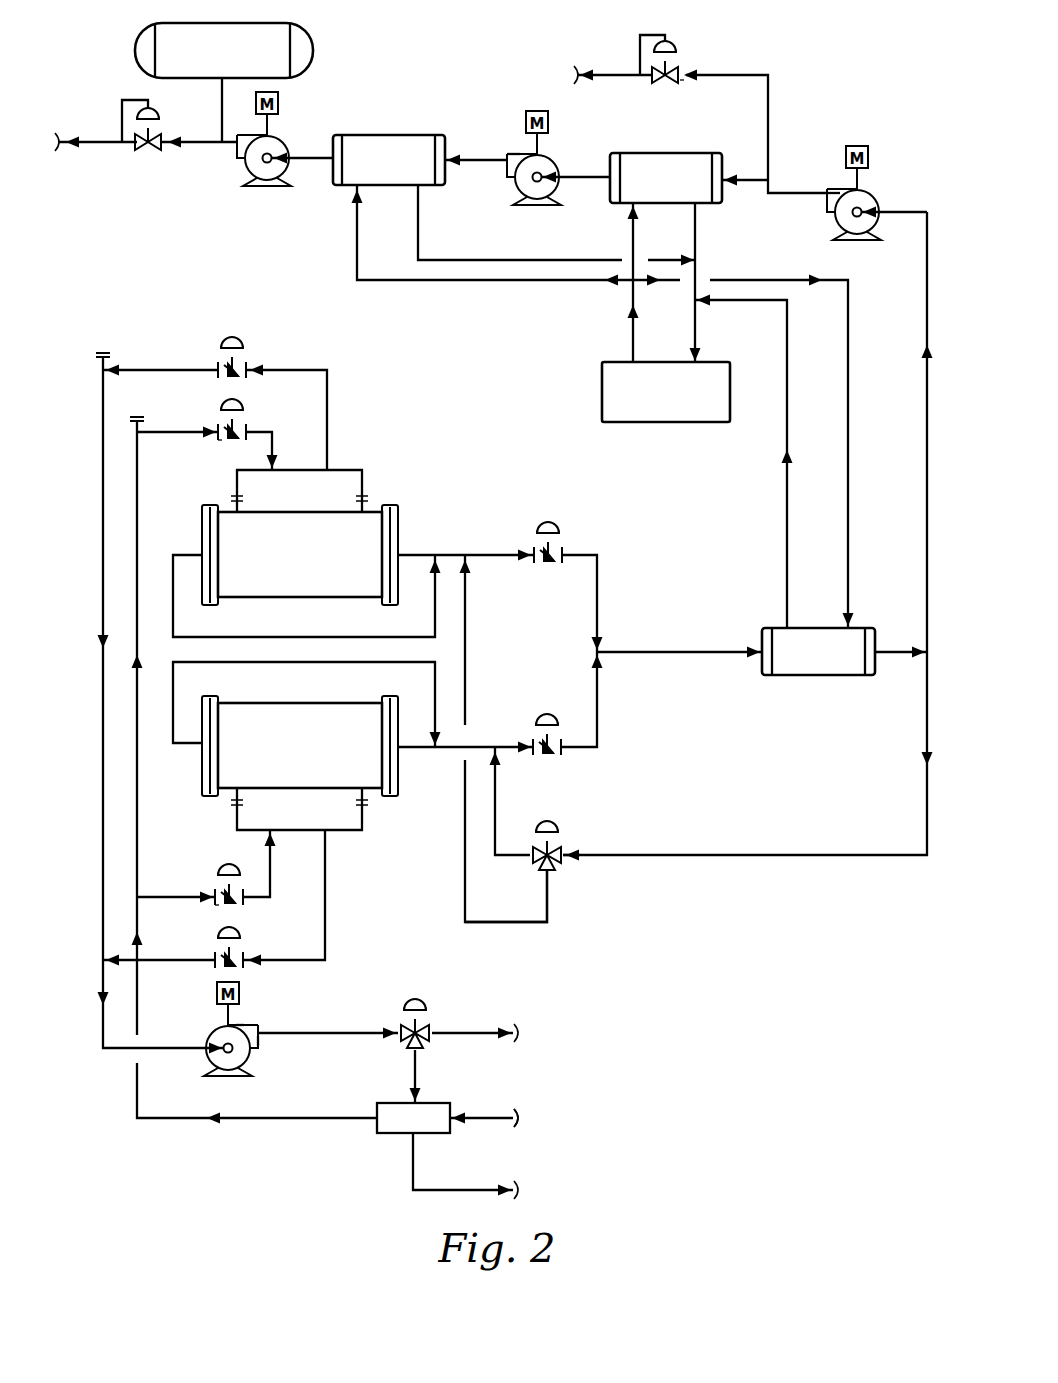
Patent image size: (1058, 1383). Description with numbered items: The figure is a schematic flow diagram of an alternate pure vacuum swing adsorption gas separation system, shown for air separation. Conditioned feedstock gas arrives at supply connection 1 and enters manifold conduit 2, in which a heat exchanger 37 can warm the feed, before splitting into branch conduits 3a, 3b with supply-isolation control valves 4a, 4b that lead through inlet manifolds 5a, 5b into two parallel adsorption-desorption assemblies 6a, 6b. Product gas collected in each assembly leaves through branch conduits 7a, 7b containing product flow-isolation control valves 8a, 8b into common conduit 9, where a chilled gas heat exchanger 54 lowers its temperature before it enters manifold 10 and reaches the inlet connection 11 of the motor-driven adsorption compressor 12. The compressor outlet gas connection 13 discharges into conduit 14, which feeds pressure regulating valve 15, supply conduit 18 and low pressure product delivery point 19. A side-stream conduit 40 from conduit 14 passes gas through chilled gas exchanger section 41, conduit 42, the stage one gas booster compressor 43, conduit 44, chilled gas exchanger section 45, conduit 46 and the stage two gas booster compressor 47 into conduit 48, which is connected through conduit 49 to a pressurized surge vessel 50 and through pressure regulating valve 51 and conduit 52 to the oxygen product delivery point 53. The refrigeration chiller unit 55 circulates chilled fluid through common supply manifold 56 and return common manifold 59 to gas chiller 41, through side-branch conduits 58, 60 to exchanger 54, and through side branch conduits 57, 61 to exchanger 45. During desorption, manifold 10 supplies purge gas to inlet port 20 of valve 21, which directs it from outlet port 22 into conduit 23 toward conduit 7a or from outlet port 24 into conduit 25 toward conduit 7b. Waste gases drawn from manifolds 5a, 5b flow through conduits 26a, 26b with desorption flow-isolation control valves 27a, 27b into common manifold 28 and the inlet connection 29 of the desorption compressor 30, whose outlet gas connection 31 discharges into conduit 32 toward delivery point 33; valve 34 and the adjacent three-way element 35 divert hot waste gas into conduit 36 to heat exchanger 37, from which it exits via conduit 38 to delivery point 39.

The supply connection 1 is at (522, 1118).
The manifold conduit 2 is at (130, 520).
The branch conduit 3a is at (268, 855).
The branch conduit 3b is at (176, 430).
The supply-isolation control valve 4a is at (216, 905).
The supply-isolation control valve 4b is at (218, 442).
The inlet manifold 5a is at (358, 832).
The inlet manifold 5b is at (360, 470).
The adsorption-desorption assembly 6a is at (300, 746).
The adsorption-desorption assembly 6b is at (300, 555).
The branch conduit 7a is at (345, 663).
The branch conduit 7b is at (445, 553).
The product flow-isolation control valve 8a is at (565, 756).
The product flow-isolation control valve 8b is at (565, 546).
The common conduit 9 is at (640, 650).
The manifold 10 is at (926, 412).
The inlet connection 11 is at (880, 200).
The adsorption compressor 12 is at (838, 190).
The compressor outlet gas connection 13 is at (828, 200).
The conduit 14 is at (770, 96).
The pressure regulating valve 15 is at (666, 84).
The supply conduit 18 is at (622, 78).
The gaseous product delivery point 19 is at (572, 75).
The inlet port 20 is at (565, 848).
The valve 21 is at (555, 825).
The outlet port 22 is at (535, 866).
The conduit 23 is at (497, 790).
The outlet port 24 is at (560, 868).
The conduit 25 is at (468, 635).
The conduit 26a is at (327, 886).
The conduit 26b is at (148, 368).
The desorption flow-isolation control valve 27a is at (247, 956).
The desorption flow-isolation control valve 27b is at (250, 366).
The common manifold 28 is at (100, 418).
The inlet connection 29 is at (208, 1058).
The desorption compressor 30 is at (250, 1026).
The compressor outlet gas connection 31 is at (262, 1042).
The conduit 32 is at (322, 1032).
The delivery point 33 is at (522, 1034).
The valve 34 is at (424, 1005).
The three-way valve 35 is at (430, 1045).
The conduit 36 is at (412, 1076).
The heat exchanger 37 is at (390, 1135).
The conduit 38 is at (418, 1168).
The delivery point 39 is at (522, 1191).
The side-stream conduit 40 is at (752, 176).
The chilled gas exchanger section 41 is at (666, 178).
The conduit 42 is at (576, 175).
The stage 1 gas booster compressor 43 is at (525, 152).
The conduit 44 is at (485, 163).
The chilled gas exchanger section 45 is at (389, 160).
The conduit 46 is at (313, 162).
The stage 2 gas booster compressor 47 is at (282, 136).
The conduit 48 is at (203, 146).
The conduit 49 is at (222, 112).
The pressurized surge vessel 50 is at (224, 50).
The pressure regulating valve 51 is at (150, 150).
The conduit 52 is at (101, 146).
The oxygen product delivery point 53 is at (50, 140).
The chilled gas heat exchanger 54 is at (818, 651).
The refrigeration chiller unit 55 is at (666, 392).
The common supply manifold 56 is at (630, 212).
The side branch conduit 57 is at (497, 283).
The side-branch conduit 58 is at (850, 280).
The return common manifold 59 is at (697, 334).
The side-branch conduit 60 is at (786, 470).
The side branch conduit 61 is at (495, 258).